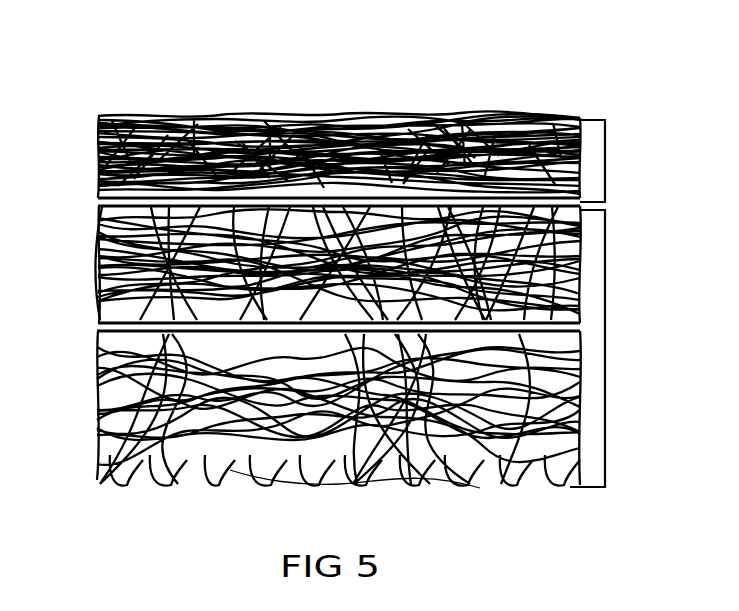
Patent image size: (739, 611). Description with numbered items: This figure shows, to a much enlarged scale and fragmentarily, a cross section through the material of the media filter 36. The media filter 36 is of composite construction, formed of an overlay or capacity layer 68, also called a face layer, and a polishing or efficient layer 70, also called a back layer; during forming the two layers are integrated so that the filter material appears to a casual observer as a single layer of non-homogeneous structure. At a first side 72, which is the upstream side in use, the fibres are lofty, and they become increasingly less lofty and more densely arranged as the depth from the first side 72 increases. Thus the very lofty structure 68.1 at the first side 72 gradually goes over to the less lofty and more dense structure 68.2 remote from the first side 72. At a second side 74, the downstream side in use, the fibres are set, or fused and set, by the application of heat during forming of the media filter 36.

The media filter 36 is at (276, 64).
The second side 74 is at (416, 100).
The polishing or efficient layer 70 is at (605, 158).
The overlay or capacity layer 68 is at (605, 337).
The less lofty and more dense structure 68.2 is at (100, 283).
The very lofty structure 68.1 is at (130, 410).
The first side 72 is at (328, 503).